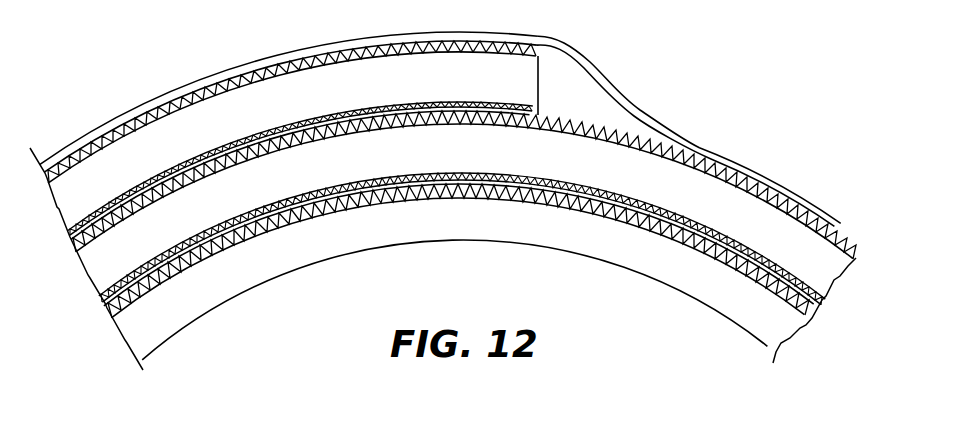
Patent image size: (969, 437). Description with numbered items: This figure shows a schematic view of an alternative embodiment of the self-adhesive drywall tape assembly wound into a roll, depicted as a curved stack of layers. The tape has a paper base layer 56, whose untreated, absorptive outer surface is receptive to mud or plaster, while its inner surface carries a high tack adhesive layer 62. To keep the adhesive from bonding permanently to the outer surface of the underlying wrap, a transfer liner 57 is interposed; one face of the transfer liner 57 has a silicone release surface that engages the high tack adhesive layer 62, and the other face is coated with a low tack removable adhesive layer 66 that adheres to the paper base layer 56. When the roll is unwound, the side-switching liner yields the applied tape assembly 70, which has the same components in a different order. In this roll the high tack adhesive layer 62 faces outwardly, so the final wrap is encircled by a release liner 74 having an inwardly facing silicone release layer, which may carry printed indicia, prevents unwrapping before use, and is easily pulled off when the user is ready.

The applied tape assembly 70 is at (159, 72).
The release liner 74 is at (637, 110).
The high tack adhesive layer 62 is at (857, 252).
The paper base layer 56 is at (840, 276).
The transfer liner 57 is at (818, 300).
The removable adhesive layer 66 is at (102, 297).